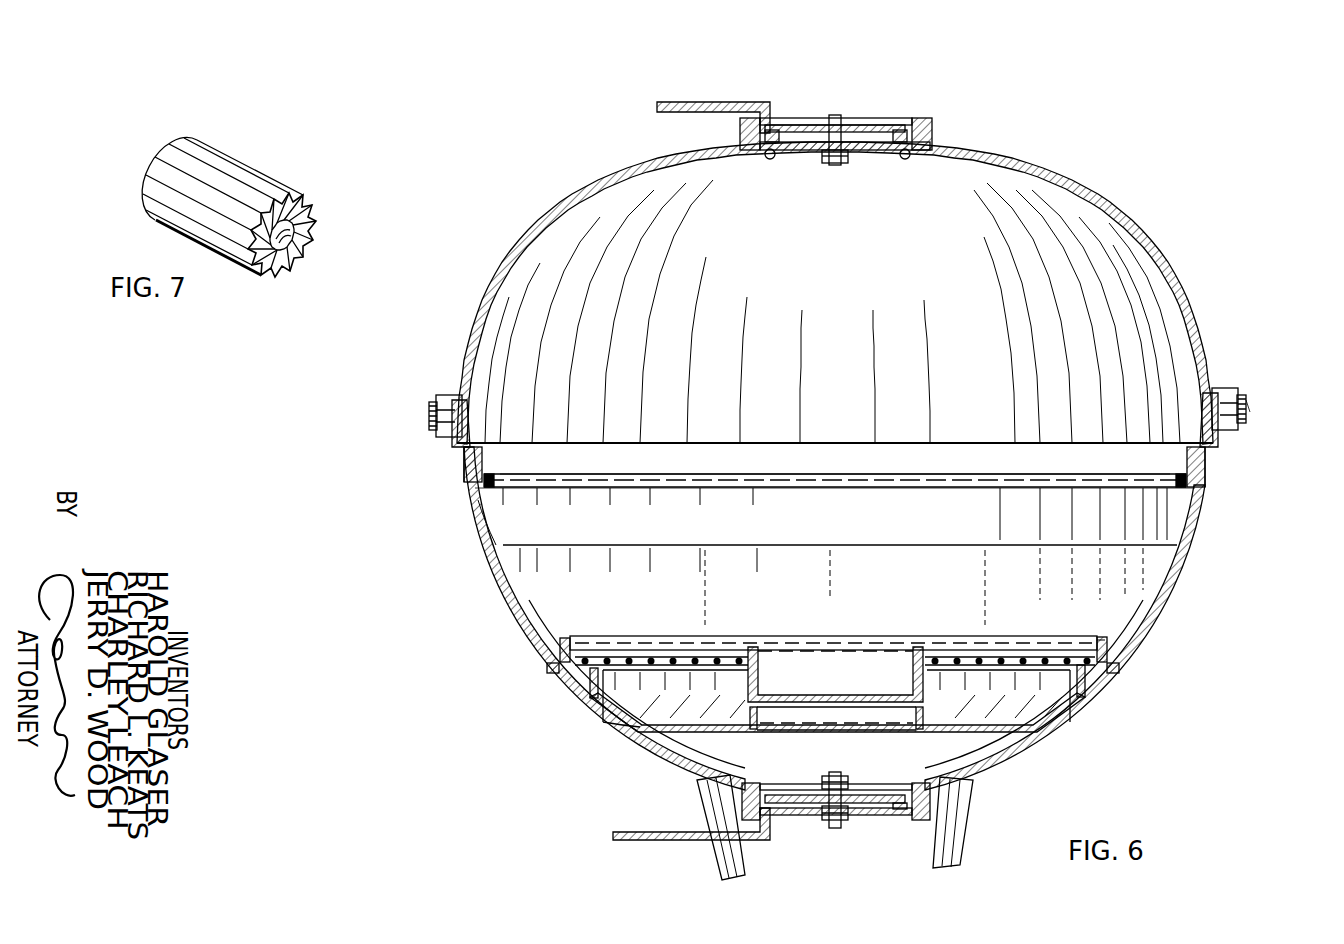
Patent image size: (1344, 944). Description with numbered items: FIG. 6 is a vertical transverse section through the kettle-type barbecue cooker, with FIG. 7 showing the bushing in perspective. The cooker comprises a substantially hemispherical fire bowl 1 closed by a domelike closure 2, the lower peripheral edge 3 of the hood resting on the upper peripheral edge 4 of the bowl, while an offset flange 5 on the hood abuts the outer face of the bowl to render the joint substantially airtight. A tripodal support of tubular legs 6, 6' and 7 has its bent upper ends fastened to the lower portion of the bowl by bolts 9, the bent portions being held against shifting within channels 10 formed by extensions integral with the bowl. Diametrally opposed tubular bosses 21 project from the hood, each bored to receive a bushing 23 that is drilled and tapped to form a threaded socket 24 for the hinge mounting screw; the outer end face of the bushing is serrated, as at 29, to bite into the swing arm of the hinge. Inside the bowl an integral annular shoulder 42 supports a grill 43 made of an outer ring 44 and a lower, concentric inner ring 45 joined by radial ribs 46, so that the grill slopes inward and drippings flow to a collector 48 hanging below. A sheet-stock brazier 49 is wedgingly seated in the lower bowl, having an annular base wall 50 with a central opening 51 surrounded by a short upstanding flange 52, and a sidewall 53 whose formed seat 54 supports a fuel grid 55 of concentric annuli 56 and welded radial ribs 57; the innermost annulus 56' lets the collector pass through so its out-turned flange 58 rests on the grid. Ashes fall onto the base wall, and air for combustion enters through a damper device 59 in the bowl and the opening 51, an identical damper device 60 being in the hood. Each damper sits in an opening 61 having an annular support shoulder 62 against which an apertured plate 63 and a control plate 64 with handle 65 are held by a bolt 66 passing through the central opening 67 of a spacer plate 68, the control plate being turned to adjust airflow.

In FIG. 6, the fire bowl 1 is at (1082, 712).
In FIG. 6, the closure 2 is at (1118, 202).
In FIG. 6, the lower peripheral edge 3 is at (463, 462).
In FIG. 6, the upper peripheral edge 4 is at (460, 392).
In FIG. 6, the offset flange 5 is at (455, 455).
In FIG. 6, the leg 6 is at (971, 841).
In FIG. 6, the leg 6' is at (711, 840).
In FIG. 6, the leg 7 is at (1252, 406).
In FIG. 6, the bolts 9 is at (1245, 477).
In FIG. 6, the channels 10 is at (1076, 638).
In FIG. 6, the tubular bosses 21 is at (447, 397).
In FIG. 7, the bushing 23 is at (250, 175).
In FIG. 6, the bushing 23 is at (432, 400).
In FIG. 7, the threaded socket 24 is at (292, 226).
In FIG. 7, the serrations 29 is at (318, 232).
In FIG. 6, the serrations 29 is at (428, 412).
In FIG. 6, the annular shoulder 42 is at (477, 500).
In FIG. 6, the grill 43 is at (1152, 462).
In FIG. 6, the outer ring 44 is at (480, 488).
In FIG. 6, the inner ring 45 is at (1000, 493).
In FIG. 6, the ribs 46 is at (490, 527).
In FIG. 6, the collector 48 is at (975, 725).
In FIG. 6, the brazier 49 is at (1110, 677).
In FIG. 6, the annular base wall 50 is at (955, 735).
In FIG. 6, the central opening 51 is at (915, 752).
In FIG. 6, the upstanding flange 52 is at (930, 745).
In FIG. 6, the sidewall 53 is at (585, 672).
In FIG. 6, the formed seat 54 is at (558, 677).
In FIG. 6, the fuel grid 55 is at (640, 660).
In FIG. 6, the annuli 56 is at (775, 658).
In FIG. 6, the innermost annulus 56' is at (790, 709).
In FIG. 6, the ribs 57 is at (600, 655).
In FIG. 6, the out-turned flange 58 is at (740, 648).
In FIG. 6, the damper device 59 is at (857, 815).
In FIG. 6, the damper device 60 is at (905, 122).
In FIG. 6, the opening 61 is at (917, 130).
In FIG. 6, the support shoulder 62 is at (912, 118).
In FIG. 6, the apertured plate 63 is at (887, 150).
In FIG. 6, the control plate 64 is at (860, 124).
In FIG. 6, the handle 65 is at (662, 102).
In FIG. 6, the bolt 66 is at (843, 122).
In FIG. 6, the central opening 67 is at (827, 122).
In FIG. 6, the spacer plate 68 is at (808, 124).